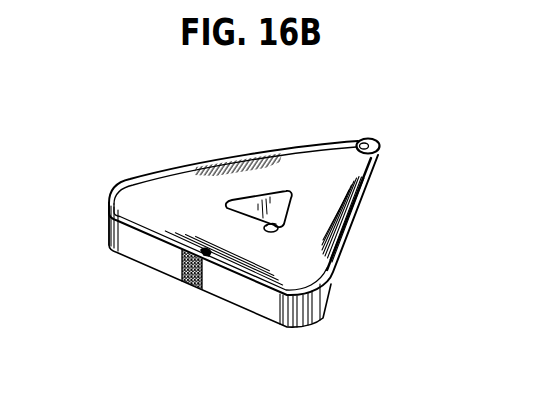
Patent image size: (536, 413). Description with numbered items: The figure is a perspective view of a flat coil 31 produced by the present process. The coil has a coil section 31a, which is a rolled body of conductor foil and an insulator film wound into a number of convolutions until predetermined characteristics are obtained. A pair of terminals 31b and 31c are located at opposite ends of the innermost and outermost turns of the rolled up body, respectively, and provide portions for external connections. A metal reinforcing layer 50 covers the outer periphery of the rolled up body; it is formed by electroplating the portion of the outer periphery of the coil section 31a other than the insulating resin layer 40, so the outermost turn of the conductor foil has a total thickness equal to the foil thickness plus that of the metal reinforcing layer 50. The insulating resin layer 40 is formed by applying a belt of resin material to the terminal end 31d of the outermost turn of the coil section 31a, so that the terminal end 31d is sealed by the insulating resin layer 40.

The flat coil 31 is at (215, 149).
The coil section 31a is at (343, 213).
The terminal 31b is at (283, 228).
The terminal 31c is at (374, 138).
The terminal end 31d is at (206, 258).
The insulating resin layer 40 is at (184, 284).
The metal reinforcing layer 50 is at (114, 194).